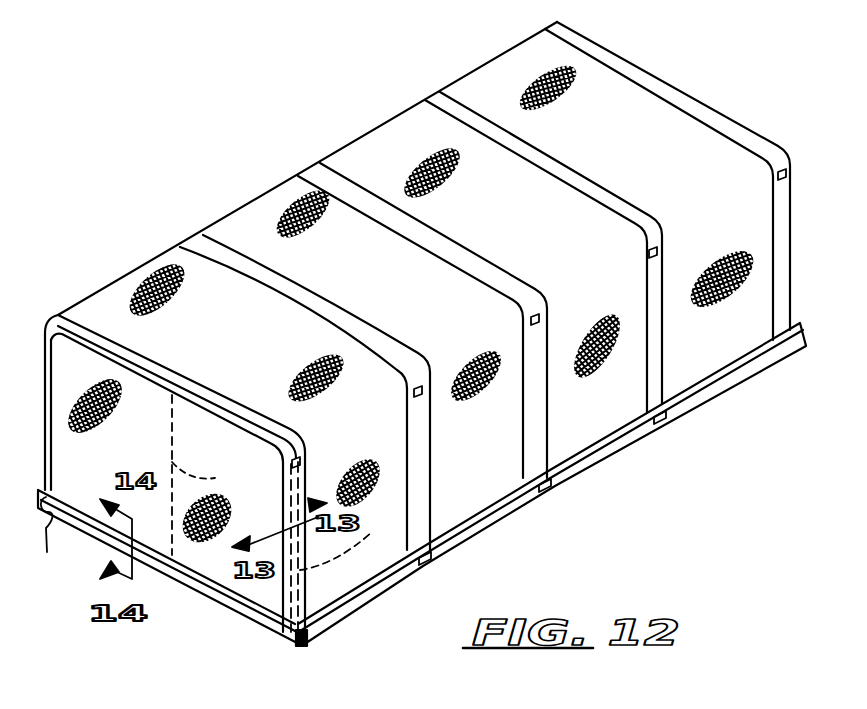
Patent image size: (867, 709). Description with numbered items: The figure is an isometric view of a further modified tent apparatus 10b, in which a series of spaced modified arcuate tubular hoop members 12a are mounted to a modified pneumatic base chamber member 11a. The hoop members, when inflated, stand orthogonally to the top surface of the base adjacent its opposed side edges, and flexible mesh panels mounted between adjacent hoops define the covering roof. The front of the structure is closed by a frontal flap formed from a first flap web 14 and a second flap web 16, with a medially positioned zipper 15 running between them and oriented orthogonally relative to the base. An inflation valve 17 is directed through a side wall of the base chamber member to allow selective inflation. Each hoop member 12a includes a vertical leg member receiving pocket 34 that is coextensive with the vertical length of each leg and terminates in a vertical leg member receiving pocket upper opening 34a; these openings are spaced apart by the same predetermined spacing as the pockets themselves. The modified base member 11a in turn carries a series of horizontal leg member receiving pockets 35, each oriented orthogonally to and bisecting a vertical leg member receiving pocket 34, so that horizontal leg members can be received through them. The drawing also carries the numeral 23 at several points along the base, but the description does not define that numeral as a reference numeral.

The modified tent apparatus 10b is at (207, 198).
The modified arcuate tubular hoop member 12a is at (323, 323).
The modified pneumatic base chamber member 11a is at (253, 624).
The hoop bracket fastener 23 is at (343, 597).
The first flap web 14 is at (130, 460).
The zipper 15 is at (205, 462).
The second flap web 16 is at (257, 510).
The inflation valve 17 is at (62, 542).
The vertical leg member receiving pocket 34 is at (352, 536).
The vertical leg member receiving pocket upper opening 34a is at (303, 444).
The horizontal leg member receiving pocket 35 is at (295, 642).